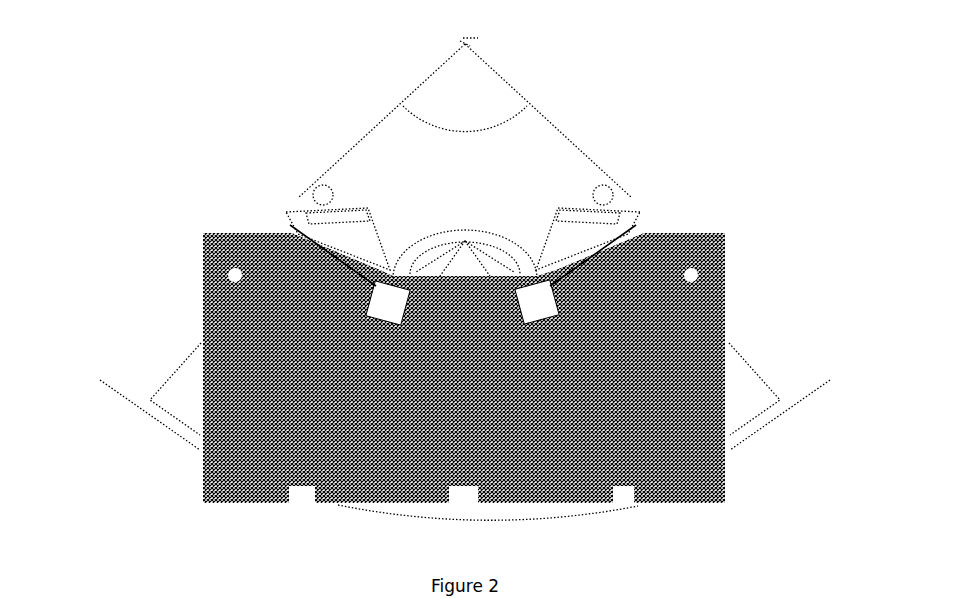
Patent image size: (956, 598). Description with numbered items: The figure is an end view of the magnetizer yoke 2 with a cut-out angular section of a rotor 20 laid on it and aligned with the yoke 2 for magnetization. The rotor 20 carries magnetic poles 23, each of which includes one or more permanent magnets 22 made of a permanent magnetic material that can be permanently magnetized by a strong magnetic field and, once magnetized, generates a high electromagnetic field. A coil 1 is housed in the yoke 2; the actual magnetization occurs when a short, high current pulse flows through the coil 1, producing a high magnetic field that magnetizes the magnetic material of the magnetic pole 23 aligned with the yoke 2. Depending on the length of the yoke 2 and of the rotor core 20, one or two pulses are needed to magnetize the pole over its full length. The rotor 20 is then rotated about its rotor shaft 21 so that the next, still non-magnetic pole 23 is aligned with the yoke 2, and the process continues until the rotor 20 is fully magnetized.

The coil 1 is at (540, 300).
The magnetizer yoke 2 is at (688, 228).
The rotor 20 is at (533, 117).
The rotor shaft 21 is at (428, 73).
The permanent magnet 22 is at (597, 212).
The magnetic pole 23 is at (421, 223).